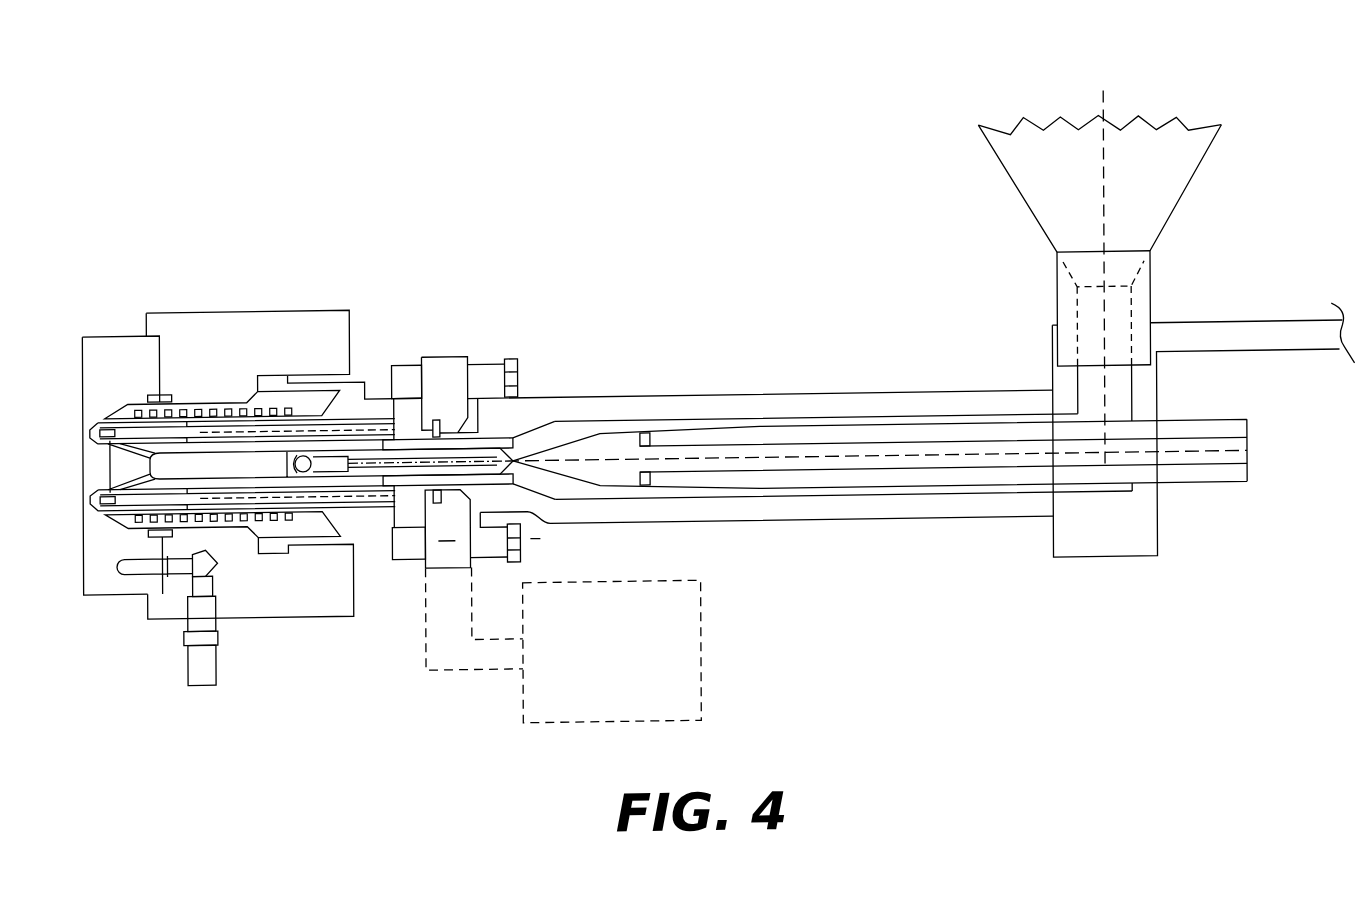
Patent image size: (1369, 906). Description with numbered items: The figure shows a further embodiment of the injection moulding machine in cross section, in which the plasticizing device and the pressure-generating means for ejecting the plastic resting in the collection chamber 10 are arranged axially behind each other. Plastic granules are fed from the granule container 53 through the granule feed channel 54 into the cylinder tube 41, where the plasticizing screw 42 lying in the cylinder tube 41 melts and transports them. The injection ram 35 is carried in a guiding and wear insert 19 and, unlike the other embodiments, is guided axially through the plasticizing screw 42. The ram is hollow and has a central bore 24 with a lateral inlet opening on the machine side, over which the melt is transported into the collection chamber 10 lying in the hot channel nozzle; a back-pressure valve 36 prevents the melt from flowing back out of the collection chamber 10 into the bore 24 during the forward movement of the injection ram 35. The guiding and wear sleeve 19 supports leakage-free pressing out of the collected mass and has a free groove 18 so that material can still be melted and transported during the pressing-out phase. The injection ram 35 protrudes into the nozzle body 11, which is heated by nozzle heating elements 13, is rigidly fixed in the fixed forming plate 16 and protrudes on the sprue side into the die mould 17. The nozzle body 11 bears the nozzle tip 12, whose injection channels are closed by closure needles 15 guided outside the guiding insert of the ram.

The collection chamber 10 is at (238, 470).
The nozzle body 11 is at (380, 403).
The nozzle tip 12 is at (125, 477).
The nozzle heating elements 13 is at (225, 397).
The closure needles 15 is at (400, 487).
The fixed forming plate 16 is at (197, 553).
The die mould 17 is at (120, 360).
The free groove 18 is at (277, 380).
The guiding and wear insert 19 is at (558, 444).
The bore 24 is at (1092, 399).
The injection ram 35 is at (896, 469).
The back-pressure valve 36 is at (312, 463).
The cylinder tube 41 is at (884, 408).
The plasticizing screw 42 is at (752, 436).
The granule container 53 is at (1163, 142).
The granule feed channel 54 is at (1150, 324).